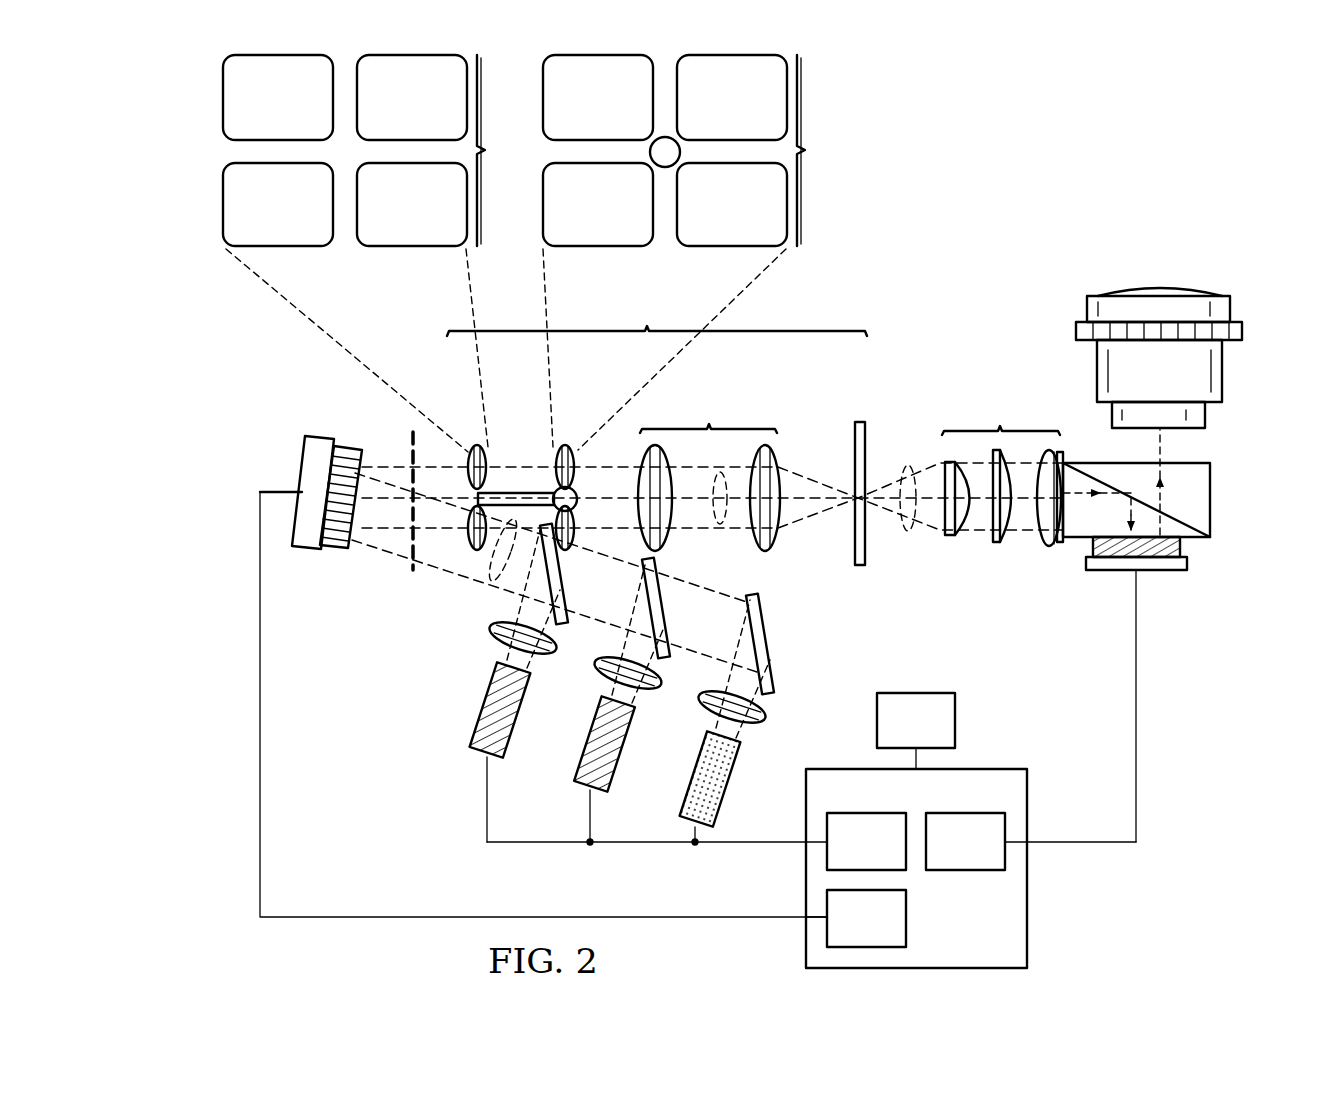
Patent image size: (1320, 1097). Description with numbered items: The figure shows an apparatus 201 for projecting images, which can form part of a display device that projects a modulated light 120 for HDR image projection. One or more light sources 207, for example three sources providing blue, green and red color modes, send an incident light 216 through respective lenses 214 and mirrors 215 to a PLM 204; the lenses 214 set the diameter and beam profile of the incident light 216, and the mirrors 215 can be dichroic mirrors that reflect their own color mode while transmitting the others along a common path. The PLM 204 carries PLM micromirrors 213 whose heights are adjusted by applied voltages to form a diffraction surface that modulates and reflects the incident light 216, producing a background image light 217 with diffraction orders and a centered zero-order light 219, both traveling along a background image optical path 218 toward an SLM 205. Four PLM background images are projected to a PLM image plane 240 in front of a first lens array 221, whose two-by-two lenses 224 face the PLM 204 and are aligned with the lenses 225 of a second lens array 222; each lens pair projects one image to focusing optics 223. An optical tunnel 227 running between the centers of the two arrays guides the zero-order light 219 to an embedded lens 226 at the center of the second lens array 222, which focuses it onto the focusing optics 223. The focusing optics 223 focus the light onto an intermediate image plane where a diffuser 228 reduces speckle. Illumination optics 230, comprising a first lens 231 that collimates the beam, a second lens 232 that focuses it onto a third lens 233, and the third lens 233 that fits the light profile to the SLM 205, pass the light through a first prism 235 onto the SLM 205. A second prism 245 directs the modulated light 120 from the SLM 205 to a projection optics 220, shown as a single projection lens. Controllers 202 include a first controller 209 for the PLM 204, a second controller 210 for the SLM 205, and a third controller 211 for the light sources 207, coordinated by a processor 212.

The apparatus 201 is at (985, 128).
The controllers 202 is at (1032, 910).
The PLM 204 is at (300, 460).
The SLM 205 is at (1145, 570).
The light sources 207 is at (515, 735).
The first controller 209 is at (846, 931).
The second controller 210 is at (946, 855).
The third controller 211 is at (846, 855).
The processor 212 is at (896, 733).
The PLM micromirrors 213 is at (345, 450).
The lenses 214 is at (495, 645).
The mirrors 215 is at (570, 628).
The incident light 216 is at (493, 585).
The background image light 217 is at (762, 552).
The background image optical path 218 is at (657, 318).
The zero-order light 219 is at (718, 525).
The projection optics 220 is at (1180, 292).
The first lens array 221 is at (471, 444).
The second lens array 222 is at (574, 444).
The focusing optics 223 is at (708, 414).
The lenses 224 is at (258, 110).
The lenses 225 is at (578, 110).
The embedded lens 226 is at (665, 156).
The optical tunnel 227 is at (541, 488).
The diffuser 228 is at (858, 566).
The illumination optics 230 is at (1001, 415).
The first lens 231 is at (950, 538).
The second lens 232 is at (997, 545).
The third lens 233 is at (1045, 548).
The first prism 235 is at (1062, 545).
The PLM image plane 240 is at (412, 560).
The second prism 245 is at (1208, 496).
The modulated light 120 is at (1162, 470).